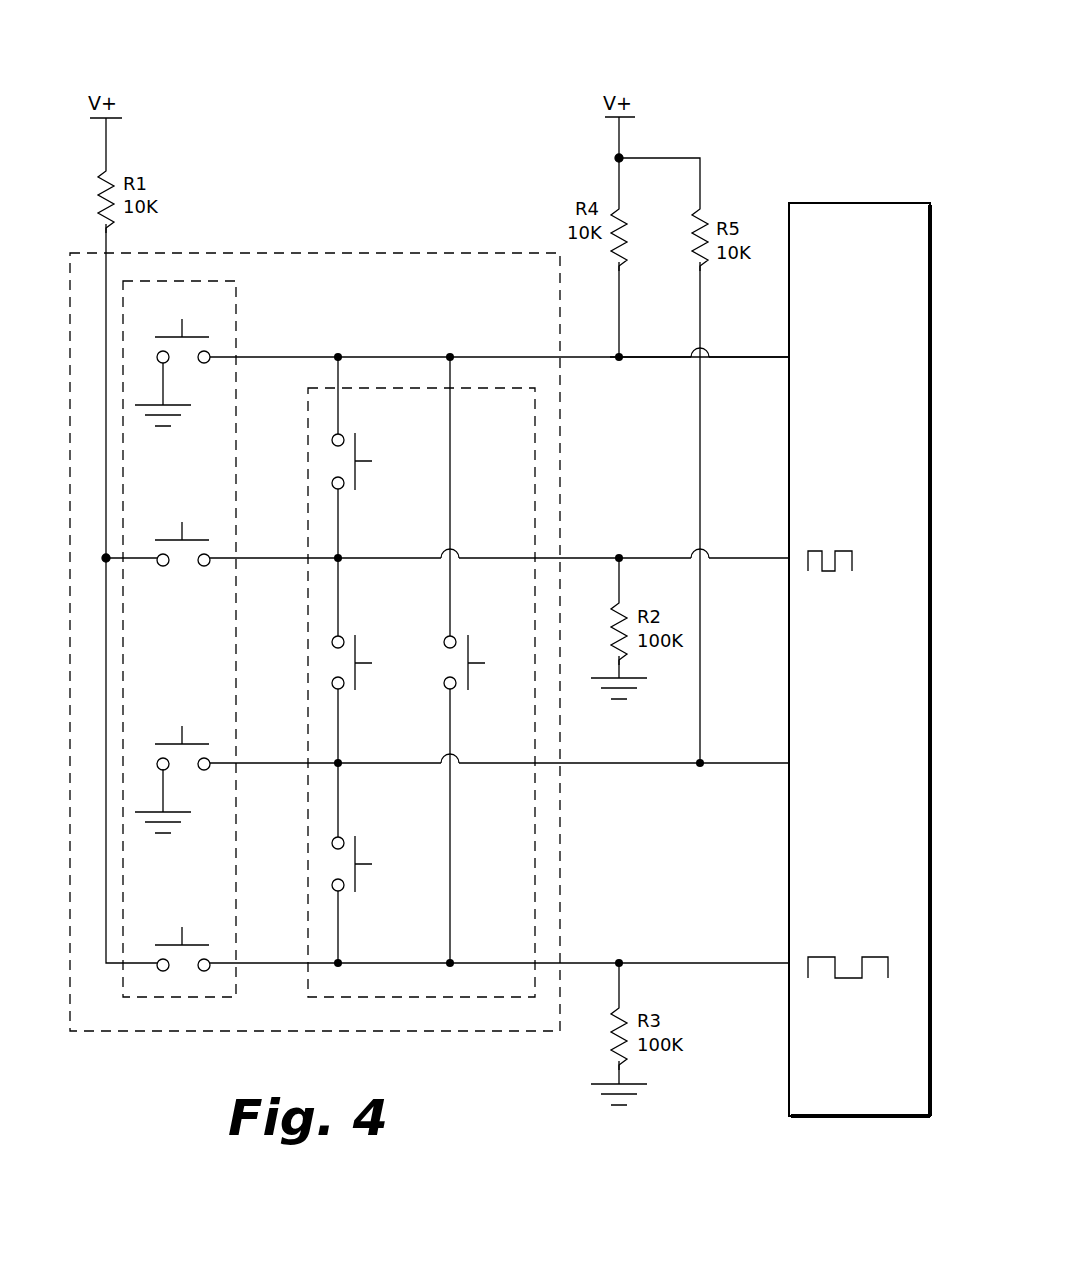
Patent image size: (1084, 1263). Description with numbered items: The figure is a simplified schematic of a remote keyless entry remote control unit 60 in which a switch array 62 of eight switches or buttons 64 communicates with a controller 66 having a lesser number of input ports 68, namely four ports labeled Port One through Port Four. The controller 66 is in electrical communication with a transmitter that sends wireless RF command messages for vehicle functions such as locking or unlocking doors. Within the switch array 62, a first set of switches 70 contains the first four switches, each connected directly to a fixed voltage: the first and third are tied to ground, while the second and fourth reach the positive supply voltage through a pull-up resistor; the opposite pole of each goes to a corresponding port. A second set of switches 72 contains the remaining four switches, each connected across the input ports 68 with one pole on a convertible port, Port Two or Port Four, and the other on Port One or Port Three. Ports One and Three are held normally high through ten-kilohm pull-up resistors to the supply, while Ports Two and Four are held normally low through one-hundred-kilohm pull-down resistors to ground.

The remote control unit 60 is at (812, 90).
The switch array 62 is at (446, 253).
The switches or buttons 64 is at (201, 338).
The controller 66 is at (877, 203).
The input ports 68 is at (789, 357).
The first set of switches 70 is at (197, 281).
The second set of switches 72 is at (484, 388).